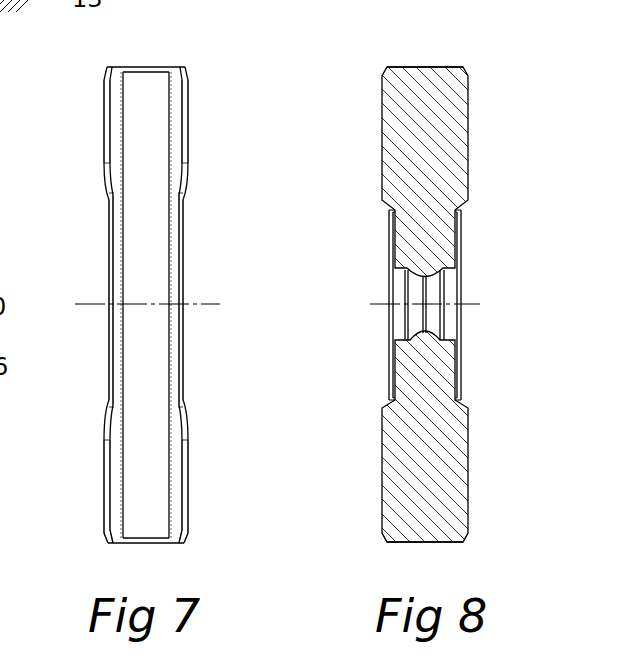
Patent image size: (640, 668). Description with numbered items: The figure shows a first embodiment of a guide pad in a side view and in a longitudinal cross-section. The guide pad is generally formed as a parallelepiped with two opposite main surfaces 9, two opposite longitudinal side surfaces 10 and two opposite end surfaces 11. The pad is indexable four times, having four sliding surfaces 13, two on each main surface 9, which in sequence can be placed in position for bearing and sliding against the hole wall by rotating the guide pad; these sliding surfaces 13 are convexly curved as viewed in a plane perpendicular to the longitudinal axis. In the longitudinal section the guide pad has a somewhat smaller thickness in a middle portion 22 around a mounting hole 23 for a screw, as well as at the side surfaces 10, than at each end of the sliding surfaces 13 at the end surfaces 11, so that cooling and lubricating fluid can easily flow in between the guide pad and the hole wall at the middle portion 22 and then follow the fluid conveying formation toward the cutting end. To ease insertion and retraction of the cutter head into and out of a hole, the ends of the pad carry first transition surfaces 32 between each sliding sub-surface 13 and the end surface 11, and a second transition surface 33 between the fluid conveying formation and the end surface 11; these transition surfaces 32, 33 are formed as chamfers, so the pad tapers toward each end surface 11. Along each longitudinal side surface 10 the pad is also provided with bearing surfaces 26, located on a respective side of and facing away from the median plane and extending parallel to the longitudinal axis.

In FIG. 7, the main surface 9 is at (102, 148).
In FIG. 8, the main surface 9 is at (378, 152).
In FIG. 7, the longitudinal side surface 10 is at (153, 305).
In FIG. 7, the end surface 11 is at (145, 67).
In FIG. 8, the end surface 11 is at (420, 67).
In FIG. 7, the sliding surface 13 is at (103, 102).
In FIG. 7, the middle portion 22 is at (193, 281).
In FIG. 8, the middle portion 22 is at (474, 246).
In FIG. 8, the mounting hole 23 is at (431, 324).
In FIG. 7, the bearing surface 26 is at (123, 360).
In FIG. 7, the first transition surface 32 is at (103, 541).
In FIG. 8, the second transition surface 33 is at (386, 539).